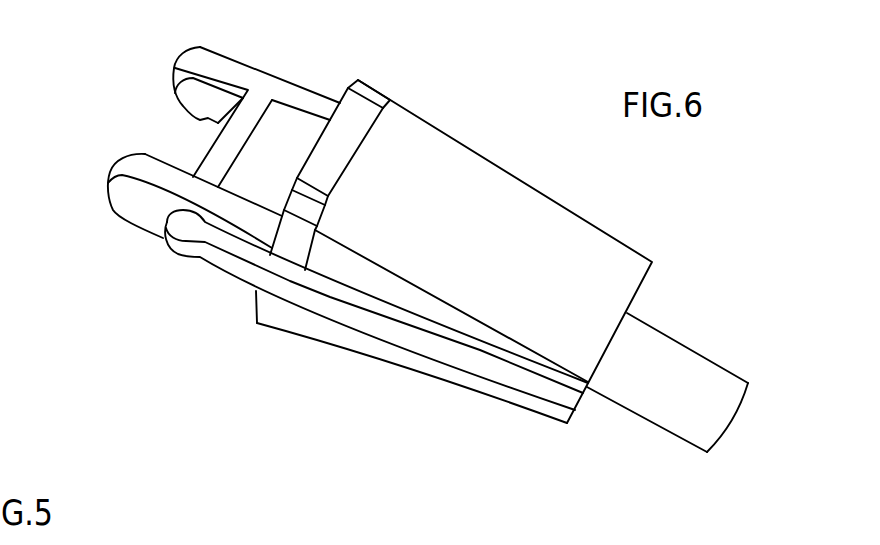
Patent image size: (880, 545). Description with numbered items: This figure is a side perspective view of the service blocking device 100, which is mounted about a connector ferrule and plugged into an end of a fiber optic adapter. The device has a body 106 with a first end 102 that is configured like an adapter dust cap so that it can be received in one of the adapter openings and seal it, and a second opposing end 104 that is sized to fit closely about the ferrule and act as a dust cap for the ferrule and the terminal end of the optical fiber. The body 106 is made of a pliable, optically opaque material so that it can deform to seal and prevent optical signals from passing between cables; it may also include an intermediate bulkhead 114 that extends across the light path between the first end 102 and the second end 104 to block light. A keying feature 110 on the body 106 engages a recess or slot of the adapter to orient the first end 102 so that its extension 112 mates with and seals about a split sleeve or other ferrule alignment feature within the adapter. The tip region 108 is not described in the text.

The service blocking device 100 is at (523, 240).
The first end 102 is at (130, 202).
The second end 104 is at (703, 397).
The body 106 is at (452, 315).
The ferrule end face 108 is at (728, 435).
The keying feature 110 is at (182, 245).
The extension 112 is at (198, 140).
The intermediate bulkhead 114 is at (358, 122).